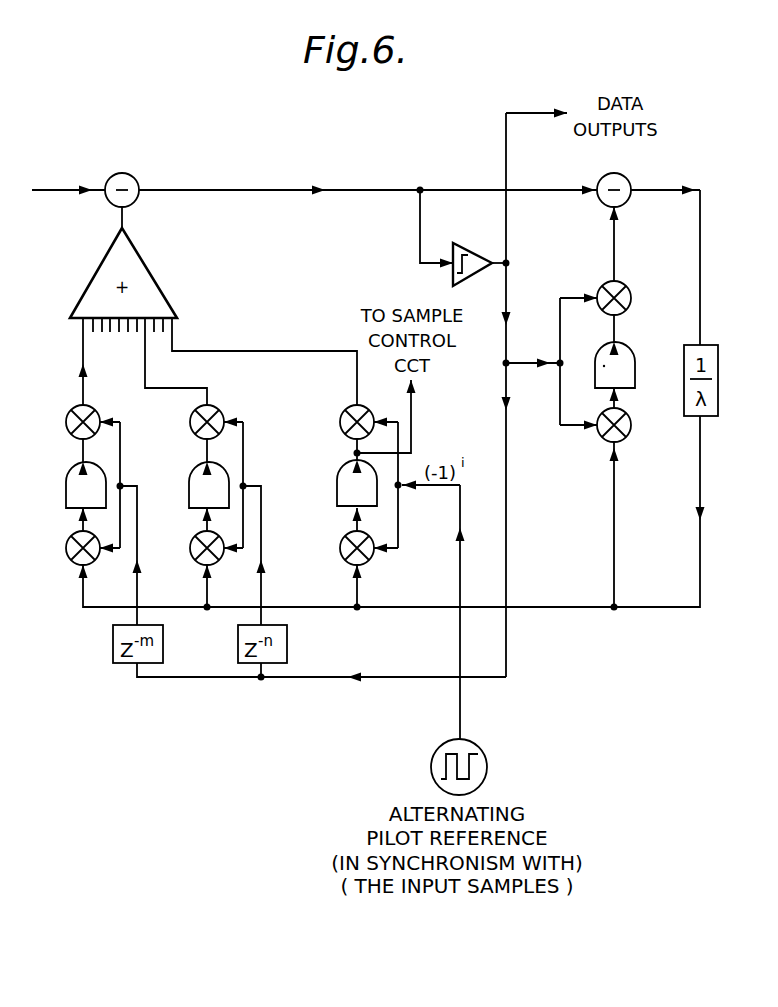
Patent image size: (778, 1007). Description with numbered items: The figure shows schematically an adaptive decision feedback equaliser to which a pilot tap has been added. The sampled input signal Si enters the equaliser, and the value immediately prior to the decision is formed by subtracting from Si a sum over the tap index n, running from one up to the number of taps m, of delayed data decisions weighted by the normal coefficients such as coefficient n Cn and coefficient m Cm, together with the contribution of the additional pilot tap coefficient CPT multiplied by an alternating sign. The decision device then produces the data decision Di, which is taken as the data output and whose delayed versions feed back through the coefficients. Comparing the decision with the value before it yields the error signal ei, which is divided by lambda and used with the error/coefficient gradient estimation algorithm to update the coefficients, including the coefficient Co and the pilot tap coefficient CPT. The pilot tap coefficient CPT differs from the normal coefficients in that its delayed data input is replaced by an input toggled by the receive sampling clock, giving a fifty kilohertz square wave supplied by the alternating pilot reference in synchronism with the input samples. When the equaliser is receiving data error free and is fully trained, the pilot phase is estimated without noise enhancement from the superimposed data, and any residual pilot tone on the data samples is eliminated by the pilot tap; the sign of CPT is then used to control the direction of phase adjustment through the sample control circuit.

The sampled input signal Si is at (68, 179).
The error signal ei is at (665, 180).
The number of taps m is at (77, 361).
The tap index n is at (169, 361).
The coefficient m Cm is at (96, 515).
The coefficient n Cn is at (220, 515).
The pilot tap coefficient CPT is at (359, 495).
The coefficient Co is at (578, 409).
The data decision Di is at (463, 238).